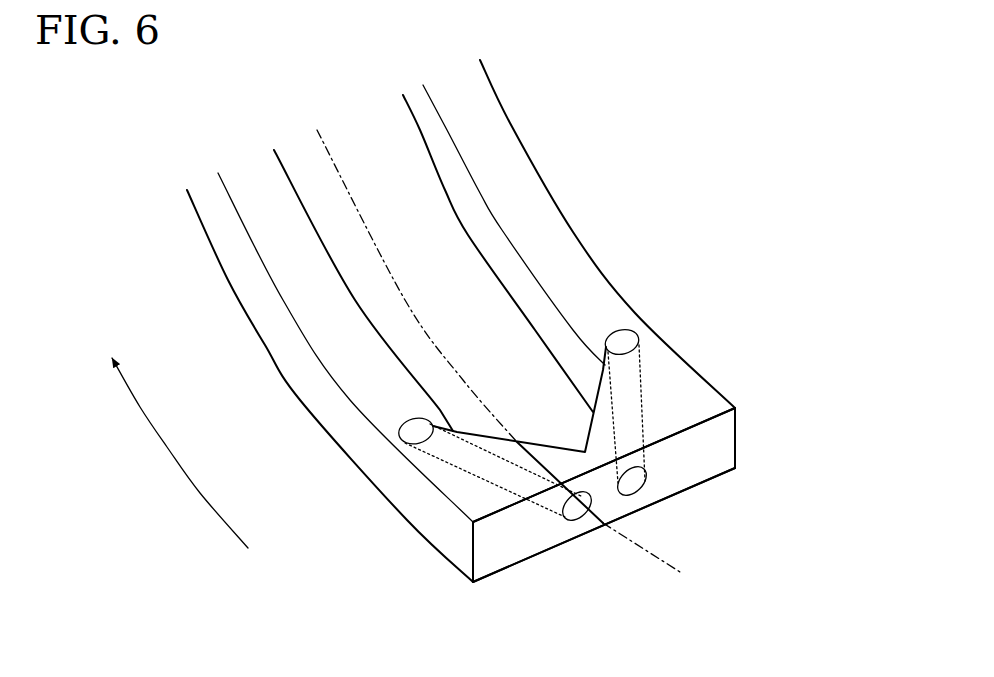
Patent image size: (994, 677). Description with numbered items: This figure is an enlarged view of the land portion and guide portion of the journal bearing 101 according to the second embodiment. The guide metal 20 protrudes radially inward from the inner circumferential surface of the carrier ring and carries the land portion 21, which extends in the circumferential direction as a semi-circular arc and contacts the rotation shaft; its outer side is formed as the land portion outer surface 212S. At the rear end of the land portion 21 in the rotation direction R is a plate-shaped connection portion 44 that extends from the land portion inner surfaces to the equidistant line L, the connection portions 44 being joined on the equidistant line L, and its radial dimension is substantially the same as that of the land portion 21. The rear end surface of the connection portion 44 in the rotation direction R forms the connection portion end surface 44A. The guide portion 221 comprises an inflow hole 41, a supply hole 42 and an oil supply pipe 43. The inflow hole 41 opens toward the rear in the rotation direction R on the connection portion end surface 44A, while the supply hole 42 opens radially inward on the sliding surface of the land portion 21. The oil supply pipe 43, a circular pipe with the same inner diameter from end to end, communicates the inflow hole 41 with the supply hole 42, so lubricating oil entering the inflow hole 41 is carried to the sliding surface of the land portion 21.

The journal bearing 101 is at (587, 173).
The land portion 21 is at (525, 130).
The guide metal 20 is at (712, 298).
The connection portion 44 is at (697, 400).
The connection portion end surface 44A is at (697, 462).
The land portion outer surface 212S is at (458, 543).
The guide portion 221 is at (605, 537).
The supply hole 42 is at (403, 422).
The inflow hole 41 is at (580, 522).
The oil supply pipe 43 is at (643, 388).
The equidistant line L is at (601, 551).
The rotation direction R is at (180, 453).